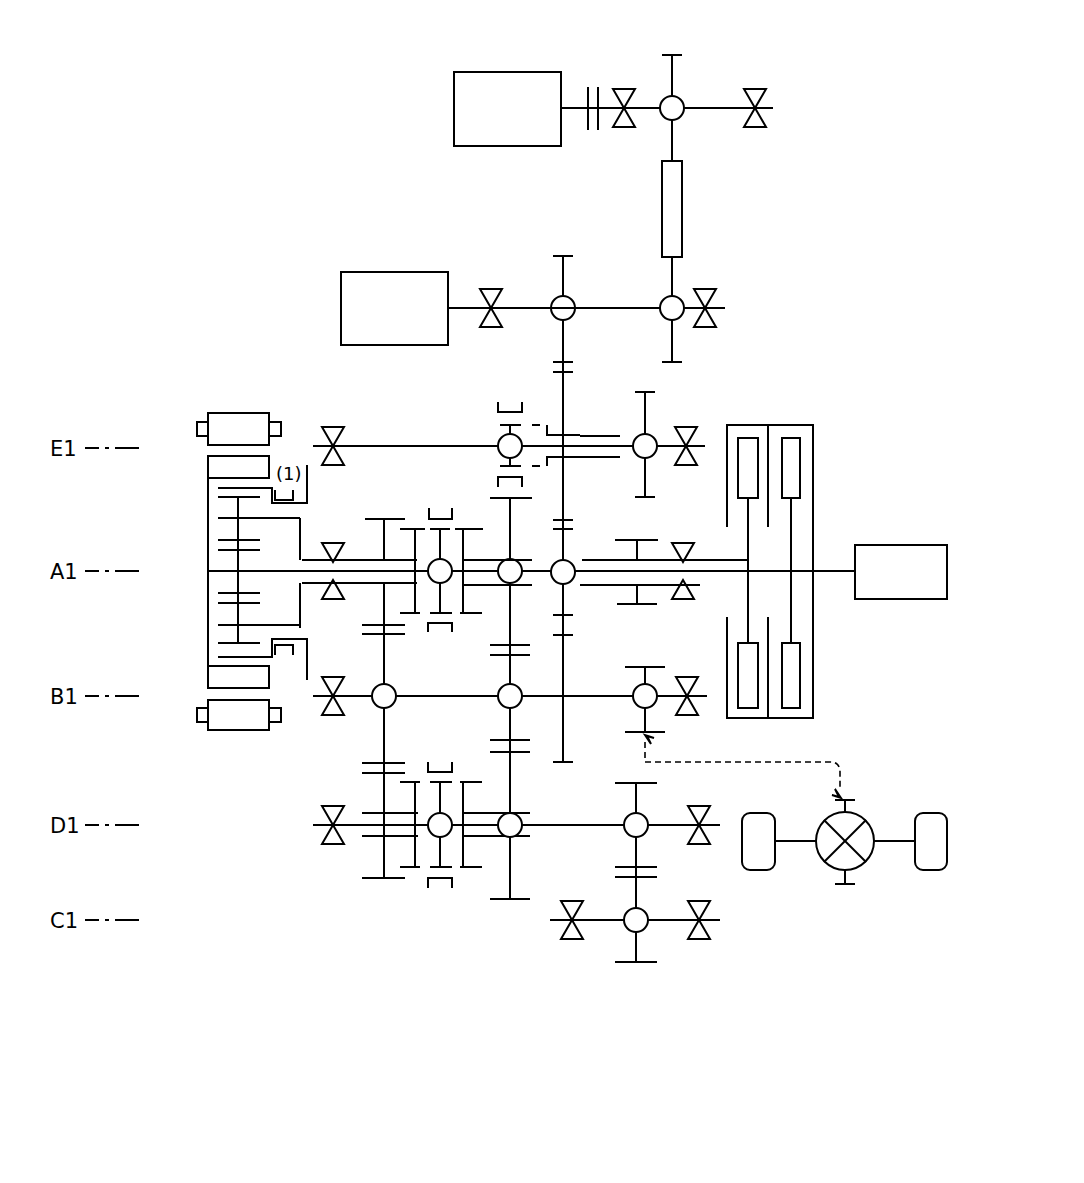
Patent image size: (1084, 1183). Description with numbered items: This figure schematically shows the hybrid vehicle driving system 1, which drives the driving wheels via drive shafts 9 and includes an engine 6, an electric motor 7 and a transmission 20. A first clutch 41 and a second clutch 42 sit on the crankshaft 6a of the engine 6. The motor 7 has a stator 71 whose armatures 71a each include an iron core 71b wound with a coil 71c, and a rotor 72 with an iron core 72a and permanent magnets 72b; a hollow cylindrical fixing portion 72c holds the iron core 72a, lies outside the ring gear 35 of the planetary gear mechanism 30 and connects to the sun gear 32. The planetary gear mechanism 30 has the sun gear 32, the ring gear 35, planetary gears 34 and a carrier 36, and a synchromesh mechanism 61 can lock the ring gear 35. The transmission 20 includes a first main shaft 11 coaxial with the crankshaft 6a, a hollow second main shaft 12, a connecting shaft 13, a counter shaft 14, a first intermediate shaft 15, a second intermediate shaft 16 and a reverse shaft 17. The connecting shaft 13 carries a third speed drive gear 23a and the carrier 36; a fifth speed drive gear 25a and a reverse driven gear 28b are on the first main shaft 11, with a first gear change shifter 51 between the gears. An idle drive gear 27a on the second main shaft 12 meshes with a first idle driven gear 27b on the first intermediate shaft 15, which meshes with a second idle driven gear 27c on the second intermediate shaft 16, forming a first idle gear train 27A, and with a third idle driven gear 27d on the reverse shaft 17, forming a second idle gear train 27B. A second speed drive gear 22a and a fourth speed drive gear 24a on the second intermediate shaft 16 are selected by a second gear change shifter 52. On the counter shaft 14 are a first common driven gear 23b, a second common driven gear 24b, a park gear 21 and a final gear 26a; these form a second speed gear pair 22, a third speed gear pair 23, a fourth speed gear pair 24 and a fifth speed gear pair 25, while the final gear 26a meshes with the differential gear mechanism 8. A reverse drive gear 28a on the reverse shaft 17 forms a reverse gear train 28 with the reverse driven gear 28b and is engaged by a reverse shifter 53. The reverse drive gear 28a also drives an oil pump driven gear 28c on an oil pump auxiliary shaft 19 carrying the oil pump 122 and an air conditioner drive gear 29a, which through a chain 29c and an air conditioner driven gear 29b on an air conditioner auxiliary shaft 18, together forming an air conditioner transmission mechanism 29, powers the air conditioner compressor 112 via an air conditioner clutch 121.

The hybrid vehicle driving system 1 is at (826, 549).
The internal combustion engine 6 is at (900, 544).
The crankshaft 6a is at (834, 570).
The electric motor 7 is at (183, 586).
The differential gear mechanism 8 is at (862, 818).
The drive shaft 9 is at (795, 845).
The first main shaft 11 is at (700, 580).
The second main shaft 12 is at (695, 560).
The connecting shaft 13 is at (380, 600).
The counter shaft 14 is at (478, 694).
The first intermediate shaft 15 is at (592, 922).
The second intermediate shaft 16 is at (596, 823).
The reverse shaft 17 is at (462, 444).
The air conditioner auxiliary shaft 18 is at (714, 112).
The oil pump auxiliary shaft 19 is at (620, 306).
The transmission 20 is at (333, 365).
The park gear 21 is at (567, 750).
The second speed gear pair 22 is at (402, 745).
The second speed drive gear 22a is at (394, 882).
The third speed gear pair 23 is at (394, 696).
The third speed drive gear 23a is at (380, 518).
The first common driven gear 23b is at (380, 690).
The fourth speed gear pair 24 is at (531, 636).
The fourth speed drive gear 24a is at (524, 755).
The second common driven gear 24b is at (572, 720).
The fifth speed gear pair 25 is at (528, 652).
The fifth speed drive gear 25a is at (510, 502).
The final gear 26a is at (630, 667).
The first idle gear train 27A is at (645, 899).
The second idle gear train 27B is at (667, 537).
The idle drive gear 27a is at (650, 612).
The first idle driven gear 27b is at (640, 965).
The second idle driven gear 27c is at (614, 865).
The third idle driven gear 27d is at (645, 390).
The reverse gear train 28 is at (577, 485).
The reverse drive gear 28a is at (568, 375).
The reverse driven gear 28b is at (568, 535).
The oil pump driven gear 28c is at (562, 255).
The air conditioner transmission mechanism 29 is at (727, 184).
The air conditioner drive gear 29a is at (688, 360).
The air conditioner driven gear 29b is at (680, 52).
The chain 29c is at (684, 228).
The planetary gear mechanism 30 is at (219, 571).
The sun gear 32 is at (230, 552).
The planetary gears 34 is at (230, 498).
The ring gear 35 is at (230, 655).
The carrier 36 is at (272, 532).
The first clutch 41 is at (791, 436).
The second clutch 42 is at (748, 436).
The first gear change shifter 51 is at (438, 505).
The second gear change shifter 52 is at (444, 895).
The reverse shifter 53 is at (505, 395).
The synchromesh mechanism 61 is at (285, 672).
The stator 71 is at (205, 418).
The armatures 71a is at (220, 756).
The iron core 71b is at (240, 722).
The coil 71c is at (255, 778).
The rotor 72 is at (177, 556).
The iron core 72a is at (208, 468).
The permanent magnets 72b is at (238, 677).
The fixing portion 72c is at (208, 628).
The air conditioner compressor 112 is at (452, 108).
The air conditioner clutch 121 is at (633, 65).
The oil pump 122 is at (394, 271).